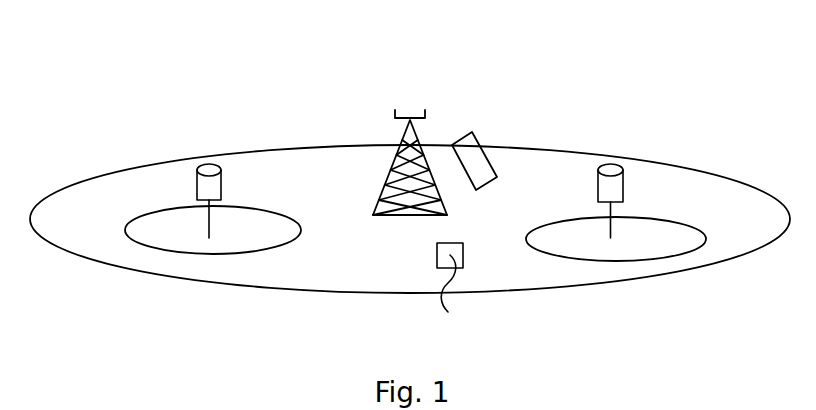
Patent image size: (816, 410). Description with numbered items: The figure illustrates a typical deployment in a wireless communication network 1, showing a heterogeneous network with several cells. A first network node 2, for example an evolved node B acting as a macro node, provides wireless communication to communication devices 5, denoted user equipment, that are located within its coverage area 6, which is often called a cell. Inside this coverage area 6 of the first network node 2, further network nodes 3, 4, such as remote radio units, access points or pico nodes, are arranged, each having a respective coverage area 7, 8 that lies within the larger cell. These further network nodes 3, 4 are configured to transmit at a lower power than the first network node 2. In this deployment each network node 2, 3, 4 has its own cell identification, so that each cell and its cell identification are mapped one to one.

The wireless communication network 1 is at (637, 87).
The first network node 2 is at (453, 294).
The further network node 3 is at (623, 182).
The further network node 4 is at (221, 183).
The communication device 5 is at (472, 136).
The coverage area 6 is at (342, 262).
The coverage area 7 is at (597, 250).
The coverage area 8 is at (172, 237).